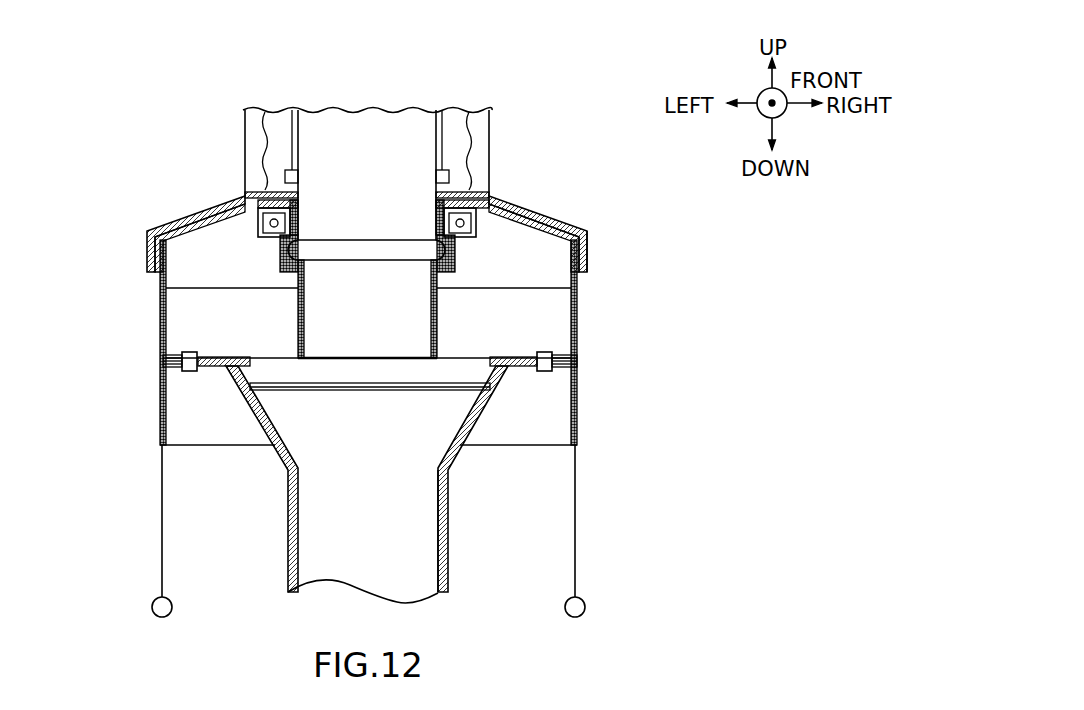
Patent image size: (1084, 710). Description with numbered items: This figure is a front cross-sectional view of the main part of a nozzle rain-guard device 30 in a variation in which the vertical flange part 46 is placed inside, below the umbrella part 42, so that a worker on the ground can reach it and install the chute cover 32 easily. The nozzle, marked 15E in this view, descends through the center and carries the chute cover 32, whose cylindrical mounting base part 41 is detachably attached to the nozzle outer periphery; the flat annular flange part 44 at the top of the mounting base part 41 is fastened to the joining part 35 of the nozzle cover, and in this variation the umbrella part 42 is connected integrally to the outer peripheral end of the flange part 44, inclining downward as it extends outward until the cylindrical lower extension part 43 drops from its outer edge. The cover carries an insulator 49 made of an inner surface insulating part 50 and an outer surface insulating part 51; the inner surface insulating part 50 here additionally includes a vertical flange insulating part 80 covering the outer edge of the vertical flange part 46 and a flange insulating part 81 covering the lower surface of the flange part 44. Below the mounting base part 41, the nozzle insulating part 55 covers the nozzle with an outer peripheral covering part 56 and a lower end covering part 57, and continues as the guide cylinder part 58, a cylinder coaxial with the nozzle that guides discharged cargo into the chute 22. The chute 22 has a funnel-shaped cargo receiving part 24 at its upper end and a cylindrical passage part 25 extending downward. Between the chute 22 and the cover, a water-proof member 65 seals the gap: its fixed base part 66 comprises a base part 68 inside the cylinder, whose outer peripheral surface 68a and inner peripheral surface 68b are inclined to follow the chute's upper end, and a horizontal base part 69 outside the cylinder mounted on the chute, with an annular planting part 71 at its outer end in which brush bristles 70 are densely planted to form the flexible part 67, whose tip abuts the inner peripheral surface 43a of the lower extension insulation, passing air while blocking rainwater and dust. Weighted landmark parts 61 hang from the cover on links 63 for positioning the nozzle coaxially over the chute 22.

The shaft 15E is at (329, 167).
The chute 22 is at (417, 480).
The cargo receiving part 24 is at (455, 458).
The passage part 25 is at (450, 555).
The nozzle rain-guard device 30 is at (505, 141).
The chute cover 32 is at (553, 210).
The joining part 35 is at (470, 197).
The mounting base part 41 is at (270, 240).
The umbrella part 42 is at (185, 222).
The lower extension part 43 is at (150, 246).
The inner peripheral surface 43a is at (185, 447).
The flange part 44 is at (265, 192).
The vertical flange part 46 is at (257, 222).
The insulator 49 is at (577, 215).
The inner surface insulating part 50 is at (535, 234).
The outer surface insulating part 51 is at (584, 226).
The nozzle insulating part 55 is at (291, 275).
The outer peripheral covering part 56 is at (455, 263).
The lower end covering part 57 is at (447, 280).
The guide cylinder part 58 is at (315, 350).
The landmark part 61 is at (152, 610).
The link 63 is at (162, 508).
The water-proof member 65 is at (212, 355).
The fixed base part 66 is at (242, 355).
The flexible part 67 is at (173, 355).
The base part inside the cylinder 68 is at (278, 393).
The outer peripheral surface 68a is at (230, 370).
The inner peripheral surface 68b is at (313, 378).
The base part outside the cylinder 69 is at (208, 365).
The brush bristles 70 is at (173, 368).
The planting part 71 is at (545, 373).
The vertical flange insulating part 80 is at (258, 247).
The flange insulating part 81 is at (268, 222).